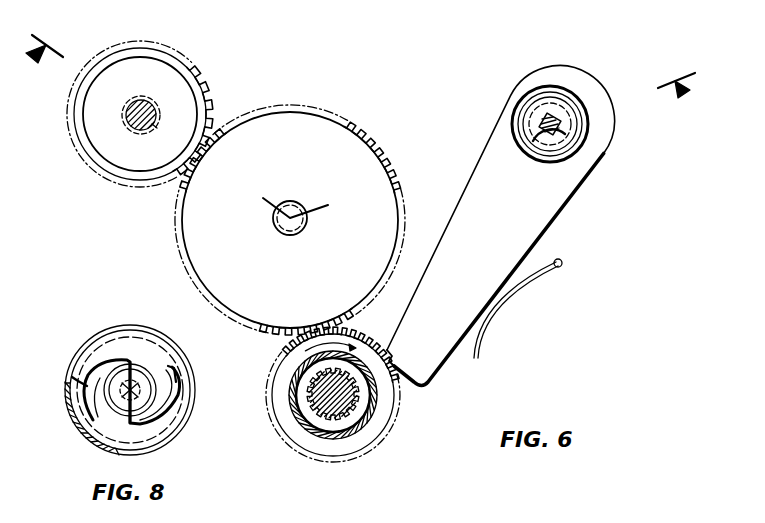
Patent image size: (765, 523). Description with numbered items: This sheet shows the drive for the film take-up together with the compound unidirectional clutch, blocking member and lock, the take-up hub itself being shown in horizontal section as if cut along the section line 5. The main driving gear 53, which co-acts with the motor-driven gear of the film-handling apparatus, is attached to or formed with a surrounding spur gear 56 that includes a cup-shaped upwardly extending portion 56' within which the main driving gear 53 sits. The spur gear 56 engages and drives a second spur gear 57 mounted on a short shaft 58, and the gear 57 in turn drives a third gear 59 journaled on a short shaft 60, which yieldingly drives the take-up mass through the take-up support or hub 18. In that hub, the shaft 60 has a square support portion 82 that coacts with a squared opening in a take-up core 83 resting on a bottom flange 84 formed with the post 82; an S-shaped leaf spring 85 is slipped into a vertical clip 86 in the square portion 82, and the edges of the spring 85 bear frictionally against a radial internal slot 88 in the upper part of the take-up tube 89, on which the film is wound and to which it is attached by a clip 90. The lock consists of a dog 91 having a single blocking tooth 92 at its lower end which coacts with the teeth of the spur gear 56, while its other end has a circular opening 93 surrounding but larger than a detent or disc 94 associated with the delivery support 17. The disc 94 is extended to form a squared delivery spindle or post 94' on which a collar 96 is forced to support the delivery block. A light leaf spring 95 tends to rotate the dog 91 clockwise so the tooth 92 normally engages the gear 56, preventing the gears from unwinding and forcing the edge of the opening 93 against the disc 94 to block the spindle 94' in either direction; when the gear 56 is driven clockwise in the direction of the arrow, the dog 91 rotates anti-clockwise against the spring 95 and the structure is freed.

In FIG. 6, the section line 5- 5 is at (359, 76).
In FIG. 6, the delivery support 17 is at (549, 73).
In FIG. 6, the take-up support or hub 18 is at (160, 38).
In FIG. 8, the take-up support or hub 18 is at (180, 446).
In FIG. 6, the main driving gear 53 is at (349, 418).
In FIG. 6, the spur gear 56 is at (362, 396).
In FIG. 6, the cup-shaped upwardly extending portion 56' is at (376, 395).
In FIG. 6, the spur gear 57 is at (290, 220).
In FIG. 6, the short shaft 58 is at (309, 219).
In FIG. 6, the third gear 59 is at (199, 72).
In FIG. 6, the short shaft 60 is at (146, 100).
In FIG. 6, the square support portion 82 is at (123, 118).
In FIG. 8, the square support portion 82 is at (150, 362).
In FIG. 8, the take-up core 83 is at (148, 370).
In FIG. 6, the bottom flange 84 is at (167, 134).
In FIG. 8, the bottom flange 84 is at (158, 427).
In FIG. 8, the S-shaped leaf spring 85 is at (118, 357).
In FIG. 8, the vertical clip 86 is at (131, 380).
In FIG. 8, the radial internal slot 88 is at (86, 348).
In FIG. 8, the take-up tube 89 is at (72, 362).
In FIG. 8, the clip 90 is at (63, 396).
In FIG. 6, the dog 91 is at (501, 226).
In FIG. 6, the blocking tooth 92 is at (397, 376).
In FIG. 6, the circular opening 93 is at (590, 120).
In FIG. 6, the detent or disc 94 is at (595, 132).
In FIG. 6, the squared delivery spindle or post 94' is at (601, 159).
In FIG. 6, the light leaf spring 95 is at (508, 296).
In FIG. 6, the collar 96 is at (566, 105).